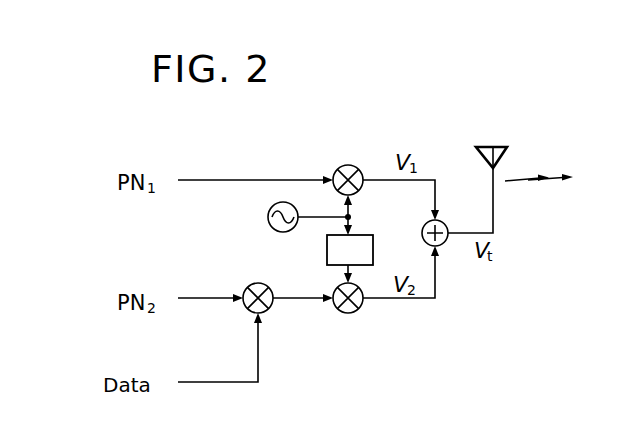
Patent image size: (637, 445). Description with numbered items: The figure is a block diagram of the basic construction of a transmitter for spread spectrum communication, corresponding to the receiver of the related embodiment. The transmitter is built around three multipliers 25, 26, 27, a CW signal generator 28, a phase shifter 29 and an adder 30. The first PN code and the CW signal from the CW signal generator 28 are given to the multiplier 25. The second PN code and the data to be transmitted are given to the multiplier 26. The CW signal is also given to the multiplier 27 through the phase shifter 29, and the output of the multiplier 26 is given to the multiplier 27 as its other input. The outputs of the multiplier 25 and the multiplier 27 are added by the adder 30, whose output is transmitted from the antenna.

The multiplier 25 is at (348, 165).
The multiplier 26 is at (271, 311).
The multiplier 27 is at (348, 313).
The CW signal generator 28 is at (268, 217).
The phase shifter 29 is at (370, 265).
The adder 30 is at (447, 224).